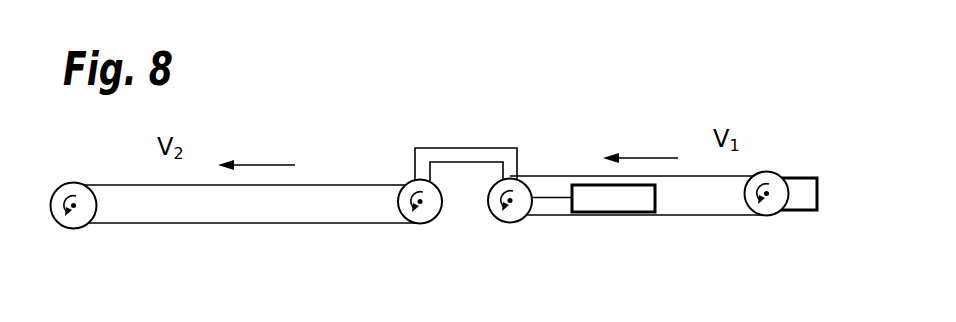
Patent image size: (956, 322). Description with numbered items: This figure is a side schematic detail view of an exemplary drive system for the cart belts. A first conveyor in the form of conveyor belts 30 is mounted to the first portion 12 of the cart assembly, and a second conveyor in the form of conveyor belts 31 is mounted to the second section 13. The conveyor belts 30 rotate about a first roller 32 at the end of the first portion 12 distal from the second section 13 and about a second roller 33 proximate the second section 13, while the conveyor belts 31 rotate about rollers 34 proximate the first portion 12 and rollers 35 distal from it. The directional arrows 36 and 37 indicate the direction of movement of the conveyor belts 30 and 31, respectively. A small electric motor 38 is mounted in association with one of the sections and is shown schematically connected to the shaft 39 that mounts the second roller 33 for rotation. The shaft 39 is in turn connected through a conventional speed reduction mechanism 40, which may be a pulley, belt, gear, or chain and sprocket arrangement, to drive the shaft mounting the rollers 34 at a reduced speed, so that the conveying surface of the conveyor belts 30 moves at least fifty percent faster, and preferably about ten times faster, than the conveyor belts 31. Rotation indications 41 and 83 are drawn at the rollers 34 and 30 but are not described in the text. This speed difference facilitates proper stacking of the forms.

The first portion 12 is at (678, 116).
The second section 13 is at (247, 135).
The conveyor belts 30 is at (767, 192).
The conveyor belts 31 is at (329, 180).
The first roller 32 is at (783, 170).
The second roller 33 is at (521, 187).
The rollers 34 is at (402, 228).
The rollers 35 is at (78, 219).
The directional arrow 36 is at (645, 157).
The directional arrow 37 is at (251, 164).
The electric motor 38 is at (598, 204).
The shaft 39 is at (513, 197).
The speed reduction mechanism 40 is at (426, 130).
The rotation of roller 34 41 is at (441, 226).
The rotation of roller 30 83 is at (768, 198).